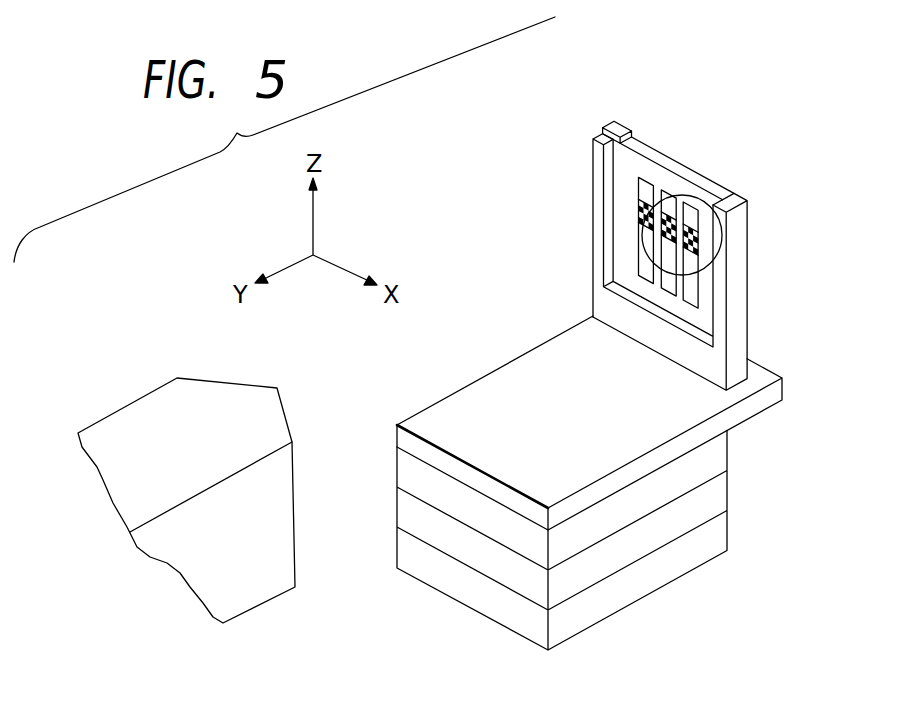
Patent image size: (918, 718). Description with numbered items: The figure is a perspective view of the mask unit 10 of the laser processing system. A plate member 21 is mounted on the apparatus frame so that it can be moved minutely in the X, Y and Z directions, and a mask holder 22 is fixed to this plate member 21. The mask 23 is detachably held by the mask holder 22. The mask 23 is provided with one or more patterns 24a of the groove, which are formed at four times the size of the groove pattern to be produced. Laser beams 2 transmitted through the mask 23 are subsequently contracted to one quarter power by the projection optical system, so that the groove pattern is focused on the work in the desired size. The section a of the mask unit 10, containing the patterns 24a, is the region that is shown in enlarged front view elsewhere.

The laser beams 2 is at (272, 592).
The mask unit 10 is at (748, 222).
The plate member 21 is at (783, 389).
The mask holder 22 is at (630, 134).
The mask 23 is at (680, 165).
The patterns 24a is at (643, 265).
The section a is at (708, 268).